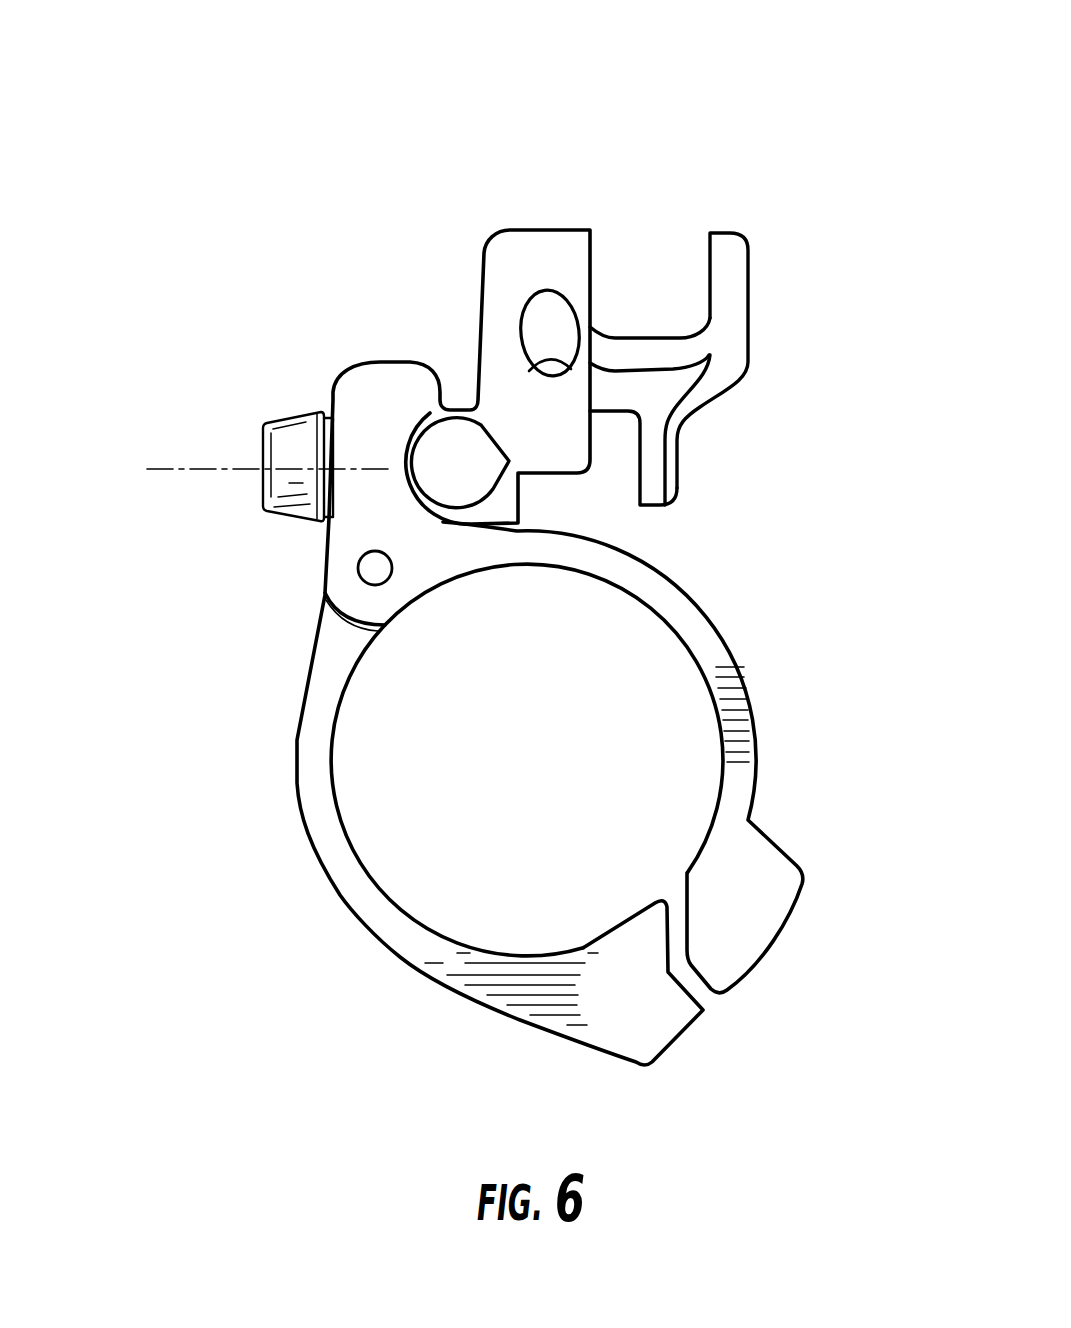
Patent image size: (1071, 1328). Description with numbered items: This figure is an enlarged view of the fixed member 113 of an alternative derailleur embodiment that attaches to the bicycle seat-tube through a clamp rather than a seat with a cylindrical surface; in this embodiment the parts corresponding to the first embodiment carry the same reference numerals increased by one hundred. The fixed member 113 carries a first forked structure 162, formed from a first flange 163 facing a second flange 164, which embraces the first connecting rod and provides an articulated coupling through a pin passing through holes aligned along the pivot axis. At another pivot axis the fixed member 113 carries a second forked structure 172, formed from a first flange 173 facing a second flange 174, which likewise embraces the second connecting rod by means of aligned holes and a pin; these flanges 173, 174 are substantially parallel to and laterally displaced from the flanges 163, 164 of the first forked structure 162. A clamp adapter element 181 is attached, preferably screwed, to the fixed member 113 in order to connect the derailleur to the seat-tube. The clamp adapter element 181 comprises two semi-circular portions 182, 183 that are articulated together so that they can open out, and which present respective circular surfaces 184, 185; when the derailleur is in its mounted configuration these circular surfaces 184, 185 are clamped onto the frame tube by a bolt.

The fixed member 113 is at (507, 260).
The first forked structure 162 is at (737, 261).
The first flange 163 is at (592, 253).
The second flange 164 is at (725, 253).
The second forked structure 172 is at (631, 752).
The first flange 173 is at (631, 752).
The second flange 174 is at (650, 470).
The clamp adapter element 181 is at (374, 830).
The semi-circular portion 182 is at (356, 920).
The semi-circular portion 183 is at (752, 738).
The circular surface 184 is at (347, 838).
The circular surface 185 is at (650, 606).